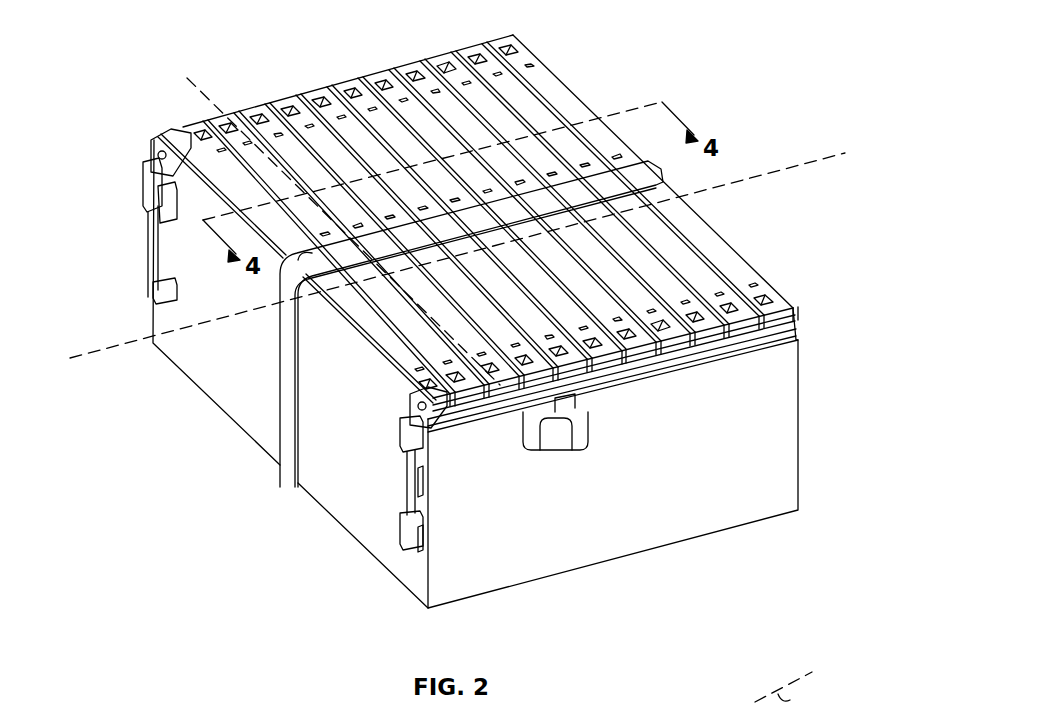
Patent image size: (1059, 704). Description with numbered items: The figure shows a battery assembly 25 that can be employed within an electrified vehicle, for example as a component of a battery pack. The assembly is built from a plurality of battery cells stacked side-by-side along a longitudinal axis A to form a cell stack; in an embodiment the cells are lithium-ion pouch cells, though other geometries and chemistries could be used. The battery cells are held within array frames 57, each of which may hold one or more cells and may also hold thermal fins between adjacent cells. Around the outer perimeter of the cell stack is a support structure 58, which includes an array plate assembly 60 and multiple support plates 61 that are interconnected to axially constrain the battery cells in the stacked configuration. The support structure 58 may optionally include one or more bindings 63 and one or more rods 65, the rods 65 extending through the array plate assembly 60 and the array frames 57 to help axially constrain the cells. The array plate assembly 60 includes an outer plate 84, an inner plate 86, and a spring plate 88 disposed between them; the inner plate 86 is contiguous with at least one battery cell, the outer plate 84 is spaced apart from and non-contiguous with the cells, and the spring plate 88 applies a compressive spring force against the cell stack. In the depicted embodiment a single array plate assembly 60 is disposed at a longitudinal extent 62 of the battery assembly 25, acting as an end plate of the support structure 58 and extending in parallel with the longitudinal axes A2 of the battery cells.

The battery assembly 25 is at (740, 80).
The array frame 57 is at (758, 296).
The support structure 58 is at (124, 86).
The array plate assembly 60 is at (198, 412).
The support plate 61 is at (357, 83).
The longitudinal extent 62 is at (398, 552).
The binding 63 is at (290, 470).
The rod 65 is at (182, 140).
The outer plate 84 is at (257, 421).
The inner plate 86 is at (208, 163).
The spring plate 88 is at (187, 168).
The longitudinal axis of the battery cells A2 is at (190, 76).
The longitudinal axis A is at (820, 162).